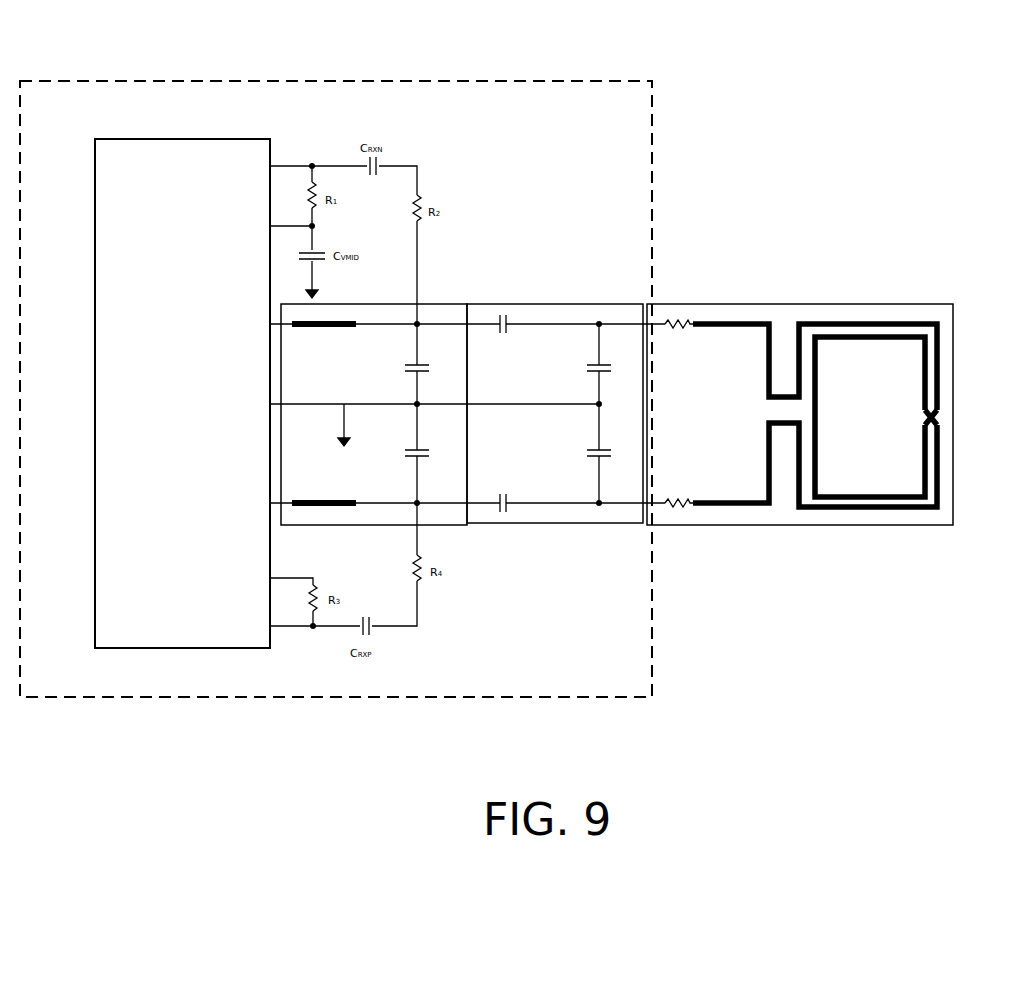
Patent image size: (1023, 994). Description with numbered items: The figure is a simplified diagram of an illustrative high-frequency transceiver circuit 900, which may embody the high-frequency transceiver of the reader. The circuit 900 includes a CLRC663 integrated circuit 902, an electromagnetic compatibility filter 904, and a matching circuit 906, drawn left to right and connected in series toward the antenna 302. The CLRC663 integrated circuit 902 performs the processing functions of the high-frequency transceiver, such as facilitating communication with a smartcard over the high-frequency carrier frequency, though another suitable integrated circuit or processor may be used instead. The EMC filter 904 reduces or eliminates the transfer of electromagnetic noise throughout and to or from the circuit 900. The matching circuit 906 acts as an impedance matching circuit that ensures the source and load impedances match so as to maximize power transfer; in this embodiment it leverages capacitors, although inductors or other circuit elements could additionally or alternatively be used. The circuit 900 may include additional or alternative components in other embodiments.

The high-frequency transceiver circuit 900 is at (336, 80).
The CLRC663 integrated circuit 902 is at (144, 146).
The electromagnetic compatibility (EMC) filter 904 is at (439, 310).
The matching circuit 906 is at (547, 310).
The antenna 302 is at (791, 303).